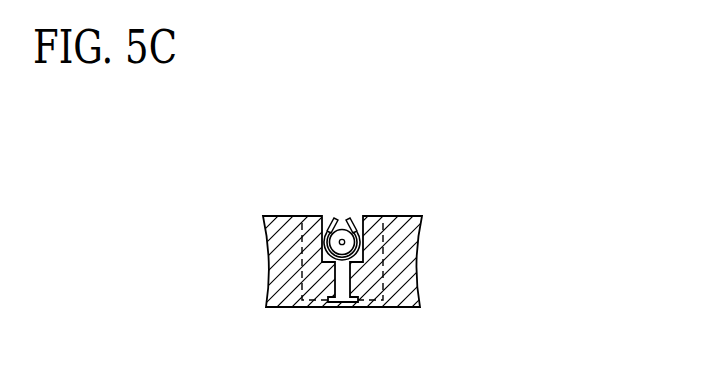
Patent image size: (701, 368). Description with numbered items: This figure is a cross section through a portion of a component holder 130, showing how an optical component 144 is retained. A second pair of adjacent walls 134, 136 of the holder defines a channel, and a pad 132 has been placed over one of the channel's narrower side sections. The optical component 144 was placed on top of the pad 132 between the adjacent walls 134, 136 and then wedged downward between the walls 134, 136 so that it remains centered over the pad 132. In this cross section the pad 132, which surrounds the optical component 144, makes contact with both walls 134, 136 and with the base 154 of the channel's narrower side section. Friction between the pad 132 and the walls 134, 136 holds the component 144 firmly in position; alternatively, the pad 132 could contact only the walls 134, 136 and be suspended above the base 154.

The component holder 130 is at (471, 139).
The pad 132 is at (357, 223).
The wall 134 is at (363, 228).
The wall 136 is at (315, 223).
The optical component 144 is at (364, 254).
The base 154 is at (323, 263).